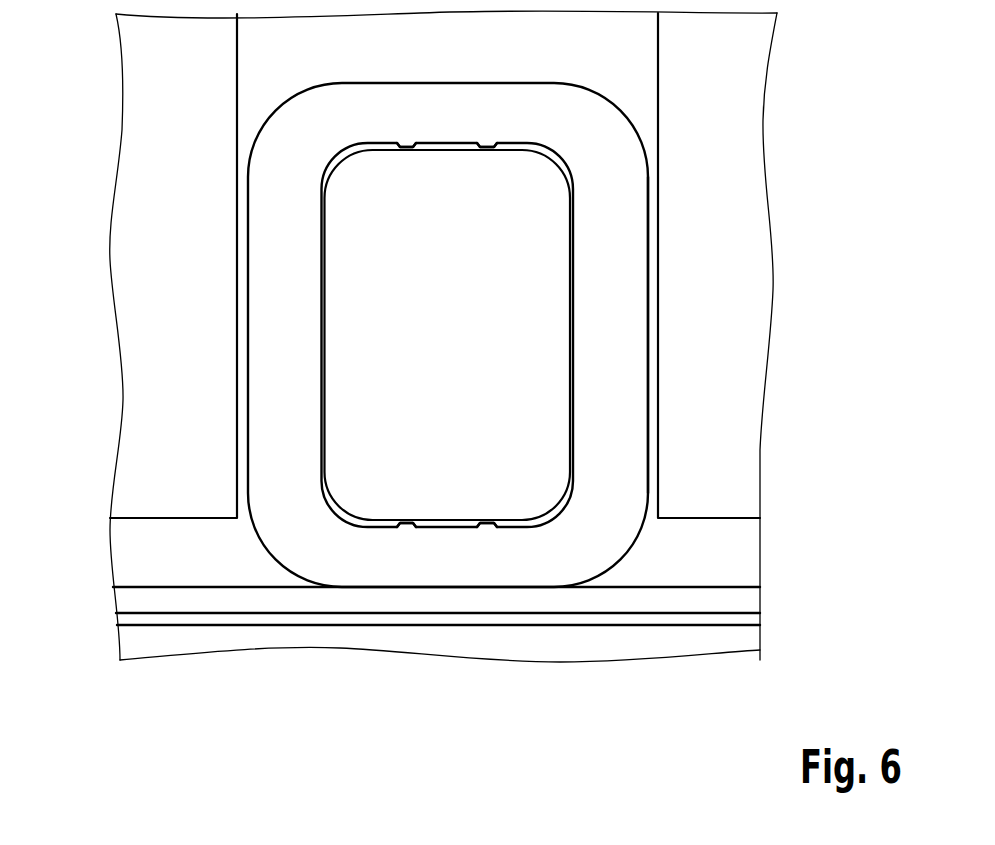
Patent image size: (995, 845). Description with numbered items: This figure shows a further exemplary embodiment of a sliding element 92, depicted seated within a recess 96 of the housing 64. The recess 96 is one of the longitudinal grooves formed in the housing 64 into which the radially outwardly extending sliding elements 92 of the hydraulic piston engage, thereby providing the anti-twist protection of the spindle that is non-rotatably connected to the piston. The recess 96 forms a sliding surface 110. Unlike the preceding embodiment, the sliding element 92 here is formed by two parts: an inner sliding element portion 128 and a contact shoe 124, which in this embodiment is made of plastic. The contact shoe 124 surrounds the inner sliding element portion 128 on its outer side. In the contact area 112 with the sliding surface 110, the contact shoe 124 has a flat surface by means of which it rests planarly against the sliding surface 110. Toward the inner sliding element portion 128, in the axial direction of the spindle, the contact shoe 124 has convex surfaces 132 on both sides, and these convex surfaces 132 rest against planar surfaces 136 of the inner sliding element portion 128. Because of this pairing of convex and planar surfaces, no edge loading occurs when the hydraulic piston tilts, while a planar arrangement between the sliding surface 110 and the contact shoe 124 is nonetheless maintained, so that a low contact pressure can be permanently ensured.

The housing 64 is at (727, 432).
The sliding element 92 is at (845, 93).
The recess 96 is at (632, 357).
The sliding surface 110 is at (632, 305).
The contact area 112 is at (648, 235).
The contact shoe 124 is at (580, 127).
The inner sliding element portion 128 is at (523, 210).
The convex surface 132 is at (352, 337).
The planar surface 136 is at (323, 285).